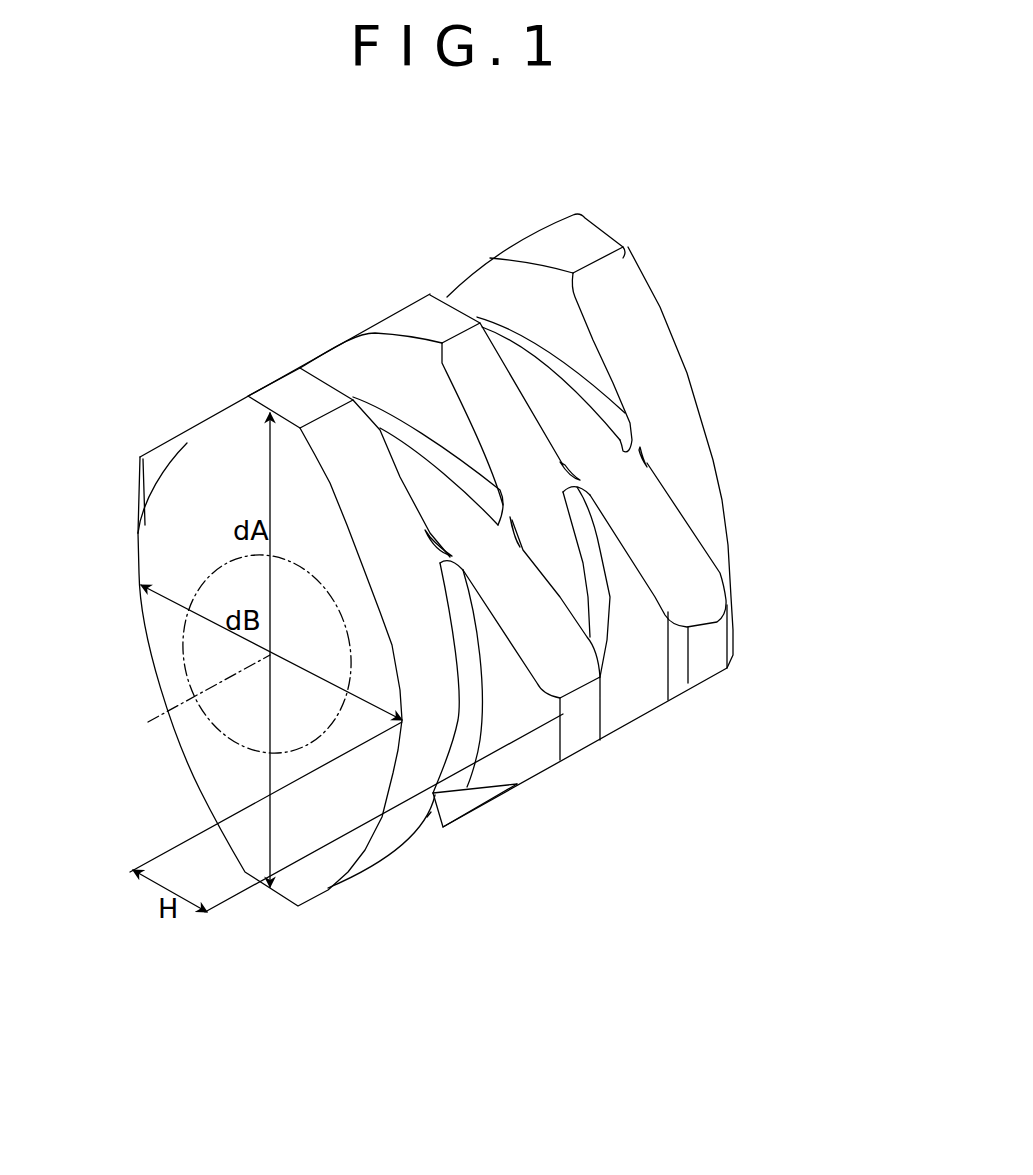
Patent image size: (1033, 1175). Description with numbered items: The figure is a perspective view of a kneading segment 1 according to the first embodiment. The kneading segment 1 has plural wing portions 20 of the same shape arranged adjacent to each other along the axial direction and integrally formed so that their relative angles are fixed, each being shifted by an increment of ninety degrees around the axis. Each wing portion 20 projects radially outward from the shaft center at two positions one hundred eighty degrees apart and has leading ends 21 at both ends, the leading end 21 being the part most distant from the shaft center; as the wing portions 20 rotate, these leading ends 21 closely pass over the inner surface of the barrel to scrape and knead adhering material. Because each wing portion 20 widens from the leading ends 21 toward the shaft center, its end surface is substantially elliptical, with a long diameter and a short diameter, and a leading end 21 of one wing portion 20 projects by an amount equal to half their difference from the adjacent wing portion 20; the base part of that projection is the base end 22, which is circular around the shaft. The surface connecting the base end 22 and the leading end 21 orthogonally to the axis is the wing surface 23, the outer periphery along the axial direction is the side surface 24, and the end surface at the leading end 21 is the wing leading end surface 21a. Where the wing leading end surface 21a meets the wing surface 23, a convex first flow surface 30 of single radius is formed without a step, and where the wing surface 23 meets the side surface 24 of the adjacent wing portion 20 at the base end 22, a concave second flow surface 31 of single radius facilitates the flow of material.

The kneading segment 1 is at (272, 260).
The wing portion 20 is at (660, 302).
The leading end 21 is at (265, 383).
The wing leading end surface 21a is at (417, 320).
The base end 22 is at (612, 398).
The wing surface 23 is at (228, 445).
The side surface 24 is at (432, 490).
The first flow surface 30 is at (388, 330).
The second flow surface 31 is at (458, 468).